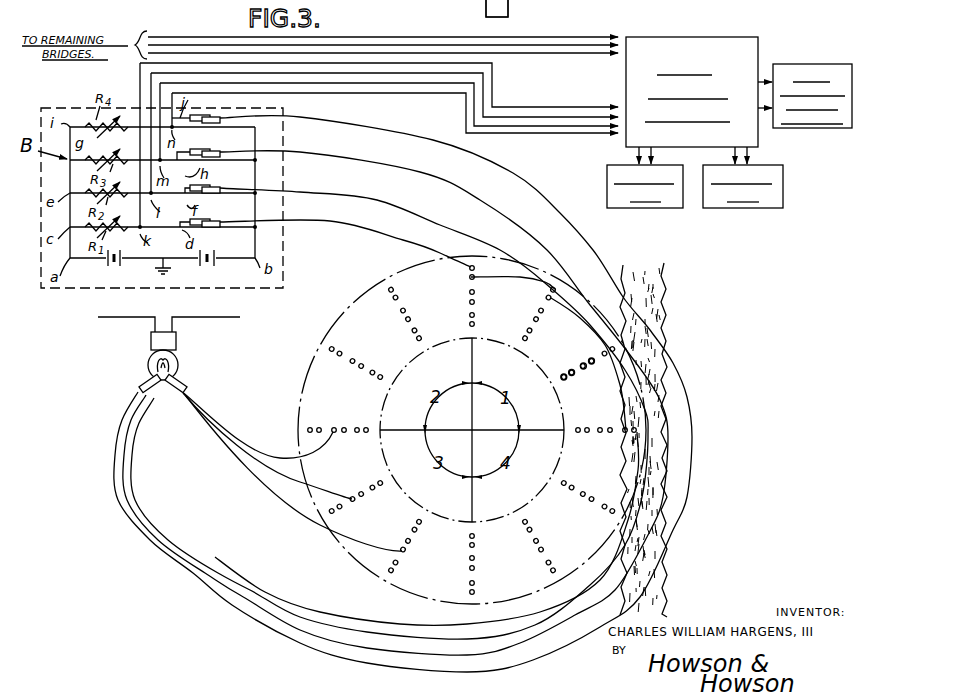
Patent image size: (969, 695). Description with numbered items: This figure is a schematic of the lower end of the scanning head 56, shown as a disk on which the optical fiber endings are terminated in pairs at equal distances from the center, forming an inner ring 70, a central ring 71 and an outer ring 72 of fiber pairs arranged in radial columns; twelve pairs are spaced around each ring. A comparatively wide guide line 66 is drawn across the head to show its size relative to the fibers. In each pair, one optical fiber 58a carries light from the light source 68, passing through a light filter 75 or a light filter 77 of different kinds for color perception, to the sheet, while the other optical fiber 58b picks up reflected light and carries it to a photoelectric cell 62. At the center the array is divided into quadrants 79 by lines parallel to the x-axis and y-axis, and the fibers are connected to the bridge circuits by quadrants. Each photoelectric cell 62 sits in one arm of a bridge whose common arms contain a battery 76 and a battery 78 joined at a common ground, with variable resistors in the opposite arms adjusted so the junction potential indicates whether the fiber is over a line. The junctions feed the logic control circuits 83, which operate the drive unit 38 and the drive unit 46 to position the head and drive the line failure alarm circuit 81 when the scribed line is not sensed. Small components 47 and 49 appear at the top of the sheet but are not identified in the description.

The drive unit 38 is at (607, 177).
The drive unit 46 is at (783, 181).
The lead 47 is at (486, 8).
The terminal block 49 is at (510, 8).
The scanning head 56 is at (345, 312).
The optical fiber 58a is at (368, 500).
The optical fiber 58b is at (403, 393).
The photoelectric cell 62 is at (204, 160).
The guide line 66 is at (657, 313).
The light source 68 is at (177, 362).
The inner ring 70 is at (572, 376).
The central ring 71 is at (583, 362).
The outer ring 72 is at (604, 346).
The light filter 75 is at (139, 377).
The battery 76 is at (111, 268).
The light filter 77 is at (187, 378).
The battery 78 is at (219, 268).
The quadrants 79 is at (430, 452).
The line failure alarm circuit 81 is at (807, 64).
The logic control circuits 83 is at (693, 37).